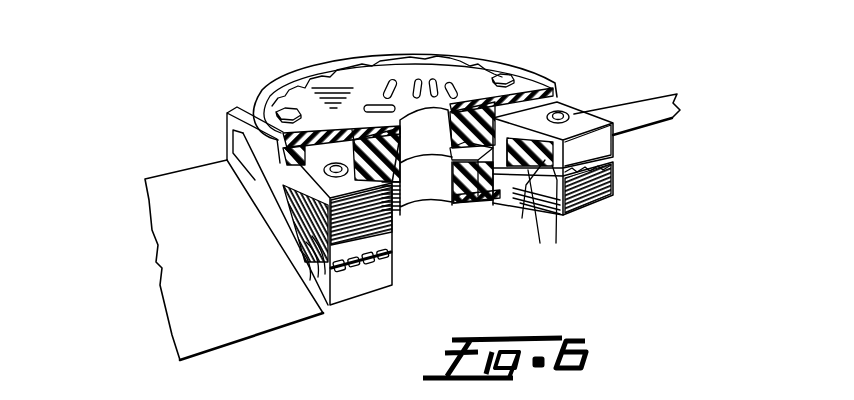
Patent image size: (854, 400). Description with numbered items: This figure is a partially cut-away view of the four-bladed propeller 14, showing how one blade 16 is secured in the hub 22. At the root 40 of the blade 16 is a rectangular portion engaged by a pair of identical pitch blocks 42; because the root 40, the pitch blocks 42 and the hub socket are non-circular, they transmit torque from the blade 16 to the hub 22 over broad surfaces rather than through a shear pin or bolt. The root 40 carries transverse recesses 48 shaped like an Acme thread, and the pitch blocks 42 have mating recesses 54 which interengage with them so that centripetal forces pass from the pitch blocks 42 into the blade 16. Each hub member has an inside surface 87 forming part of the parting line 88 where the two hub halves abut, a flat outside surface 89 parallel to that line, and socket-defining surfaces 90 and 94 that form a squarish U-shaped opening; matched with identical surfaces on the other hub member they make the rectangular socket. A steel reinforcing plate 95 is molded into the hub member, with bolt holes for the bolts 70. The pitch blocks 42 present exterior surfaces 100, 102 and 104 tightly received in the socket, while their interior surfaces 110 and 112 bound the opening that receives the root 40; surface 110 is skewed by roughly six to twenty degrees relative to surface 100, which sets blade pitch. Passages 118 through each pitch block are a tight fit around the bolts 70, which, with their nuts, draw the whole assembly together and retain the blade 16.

The four-bladed propeller 14 is at (261, 83).
The blade 16 is at (140, 186).
The hub 22 is at (307, 70).
The root 40 is at (313, 269).
The pitch blocks 42 is at (582, 108).
The recesses 48 is at (526, 199).
The recesses 54 is at (342, 272).
The bolts 70 is at (277, 112).
The inside surface 87 is at (458, 158).
The parting line 88 is at (411, 160).
The flat outside surface 89 is at (407, 75).
The socket-defining surface 90 is at (293, 167).
The socket-defining surface 94 is at (238, 147).
The steel reinforcing plate 95 is at (352, 130).
The exterior surface 100 is at (596, 113).
The exterior surface 102 is at (613, 140).
The exterior surface 104 is at (613, 165).
The interior surface 110 is at (562, 213).
The interior surface 112 is at (522, 215).
The passages 118 is at (325, 178).